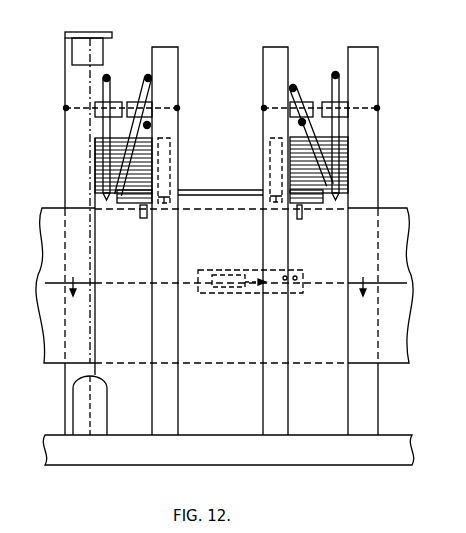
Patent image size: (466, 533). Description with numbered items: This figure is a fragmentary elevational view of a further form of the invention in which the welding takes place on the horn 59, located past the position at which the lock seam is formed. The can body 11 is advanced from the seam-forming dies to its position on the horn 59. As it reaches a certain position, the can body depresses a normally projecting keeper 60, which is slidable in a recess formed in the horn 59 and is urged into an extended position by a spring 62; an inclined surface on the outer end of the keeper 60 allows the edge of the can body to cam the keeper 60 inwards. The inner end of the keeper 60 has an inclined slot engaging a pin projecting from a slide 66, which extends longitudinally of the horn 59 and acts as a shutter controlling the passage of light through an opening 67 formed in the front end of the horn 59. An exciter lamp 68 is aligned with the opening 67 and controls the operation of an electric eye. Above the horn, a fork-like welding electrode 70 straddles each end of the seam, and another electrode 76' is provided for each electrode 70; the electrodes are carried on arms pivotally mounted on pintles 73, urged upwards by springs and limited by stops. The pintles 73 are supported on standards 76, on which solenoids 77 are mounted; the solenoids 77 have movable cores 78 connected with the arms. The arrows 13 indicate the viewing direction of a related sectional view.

The can body 11 is at (220, 373).
The section line arrows 13 is at (226, 296).
The horn 59 is at (60, 200).
The keeper 60 is at (231, 271).
The spring 62 is at (253, 291).
The slide 66 is at (122, 286).
The opening 67 is at (62, 372).
The exciter lamp 68 is at (106, 381).
The fork-like welding electrode 70 is at (110, 80).
The pintle 73 is at (63, 110).
The standard 76 is at (219, 227).
The electrode 76' is at (227, 131).
The solenoid 77 is at (98, 172).
The movable core 78 is at (151, 131).